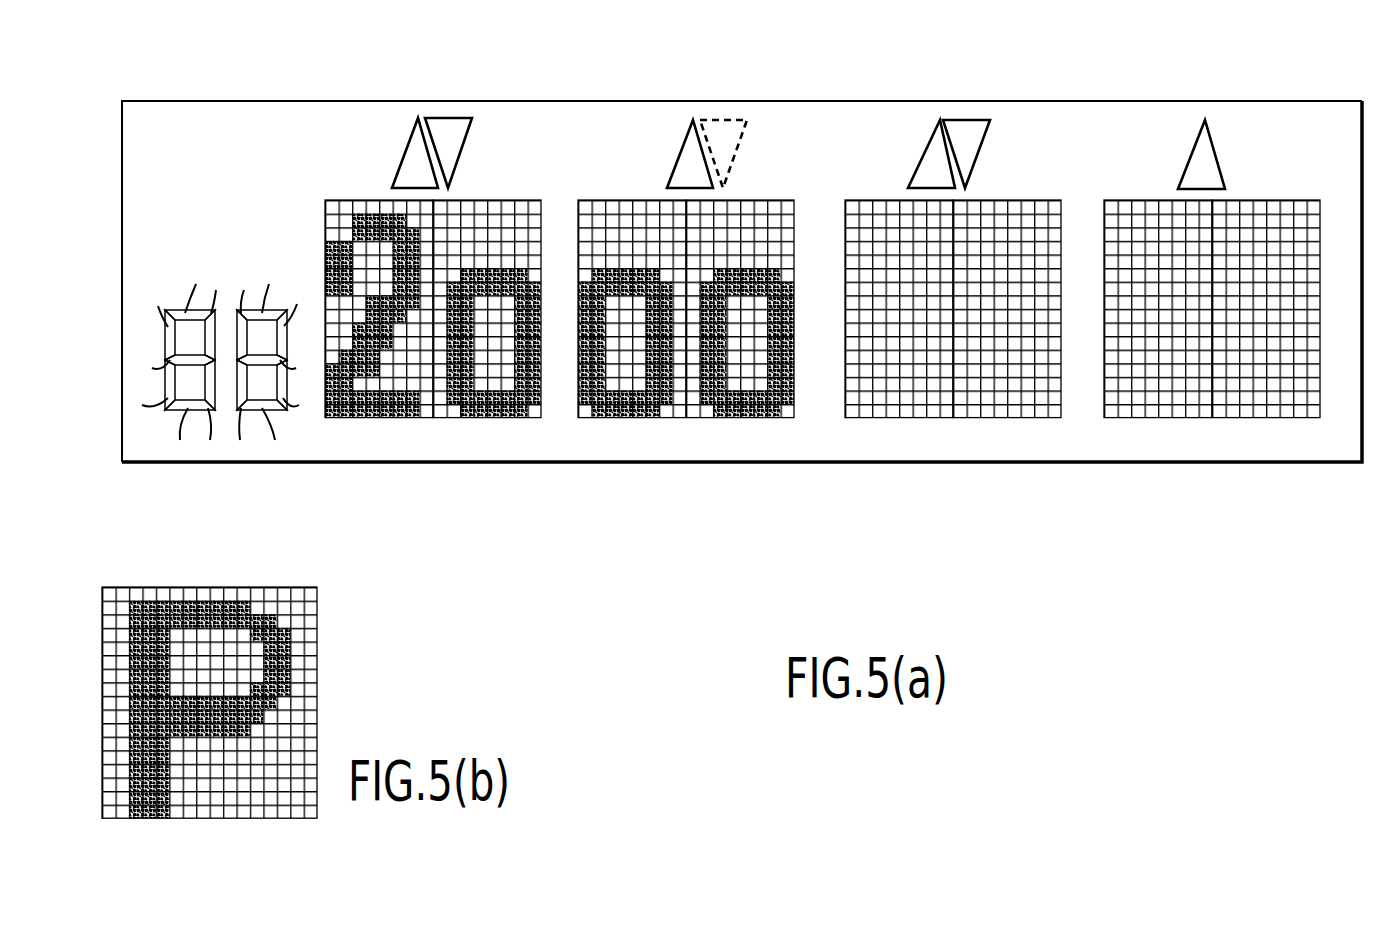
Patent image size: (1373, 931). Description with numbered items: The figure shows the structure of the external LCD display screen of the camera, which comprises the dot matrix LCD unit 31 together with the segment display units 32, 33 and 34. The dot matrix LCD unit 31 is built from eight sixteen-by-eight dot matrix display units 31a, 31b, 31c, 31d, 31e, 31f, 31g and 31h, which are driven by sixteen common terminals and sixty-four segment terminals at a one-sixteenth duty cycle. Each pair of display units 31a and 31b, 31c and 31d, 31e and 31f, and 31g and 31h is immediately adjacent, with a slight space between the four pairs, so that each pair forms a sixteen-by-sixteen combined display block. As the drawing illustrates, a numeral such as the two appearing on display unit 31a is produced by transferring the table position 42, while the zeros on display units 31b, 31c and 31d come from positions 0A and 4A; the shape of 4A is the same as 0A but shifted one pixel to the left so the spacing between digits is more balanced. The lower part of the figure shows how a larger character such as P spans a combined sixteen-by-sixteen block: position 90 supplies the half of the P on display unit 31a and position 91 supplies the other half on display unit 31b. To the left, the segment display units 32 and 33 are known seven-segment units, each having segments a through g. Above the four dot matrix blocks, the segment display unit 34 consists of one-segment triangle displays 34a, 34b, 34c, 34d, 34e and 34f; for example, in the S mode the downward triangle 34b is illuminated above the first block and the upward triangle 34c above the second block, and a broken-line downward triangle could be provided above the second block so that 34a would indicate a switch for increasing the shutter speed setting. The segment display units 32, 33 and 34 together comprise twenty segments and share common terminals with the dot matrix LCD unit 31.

In FIG. 5A, the segment display unit 34 is at (1367, 57).
In FIG. 5A, the segment display unit 34a is at (412, 145).
In FIG. 5A, the segment display unit 34b is at (450, 133).
In FIG. 5A, the segment display unit 34c is at (747, 78).
In FIG. 5A, the segment display unit 34d is at (930, 140).
In FIG. 5A, the segment display unit 34e is at (970, 133).
In FIG. 5A, the segment display unit 34f is at (1207, 140).
In FIG. 5A, the segment display unit 33 is at (157, 420).
In FIG. 5A, the segment display unit 32 is at (288, 420).
In FIG. 5A, the dot matrix LCD unit 31 is at (837, 422).
In FIG. 5A, the dot matrix display unit 31a is at (401, 387).
In FIG. 5A, the dot matrix display unit 31b is at (513, 422).
In FIG. 5A, the dot matrix display unit 31c is at (643, 387).
In FIG. 5A, the dot matrix display unit 31d is at (743, 422).
In FIG. 5A, the dot matrix display unit 31e is at (913, 422).
In FIG. 5A, the dot matrix display unit 31f is at (1010, 422).
In FIG. 5A, the dot matrix display unit 31g is at (1162, 422).
In FIG. 5A, the dot matrix display unit 31h is at (1280, 387).
In FIG. 5A, the table position 42 is at (385, 476).
In FIG. 5A, the table position 0A is at (480, 476).
In FIG. 5A, the table position 4A is at (610, 476).
In FIG. 5B, the table position 90 is at (168, 830).
In FIG. 5B, the table position 91 is at (263, 830).